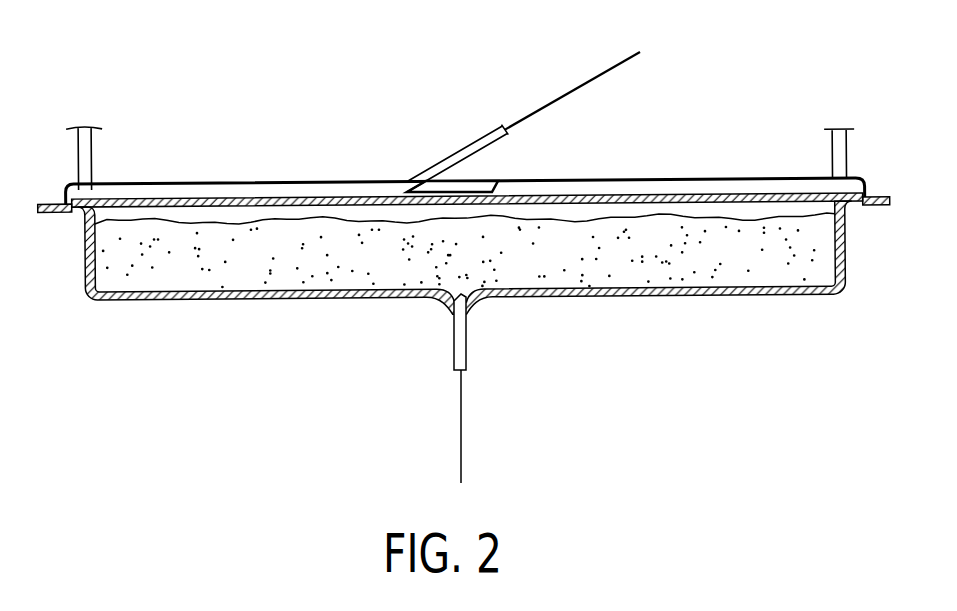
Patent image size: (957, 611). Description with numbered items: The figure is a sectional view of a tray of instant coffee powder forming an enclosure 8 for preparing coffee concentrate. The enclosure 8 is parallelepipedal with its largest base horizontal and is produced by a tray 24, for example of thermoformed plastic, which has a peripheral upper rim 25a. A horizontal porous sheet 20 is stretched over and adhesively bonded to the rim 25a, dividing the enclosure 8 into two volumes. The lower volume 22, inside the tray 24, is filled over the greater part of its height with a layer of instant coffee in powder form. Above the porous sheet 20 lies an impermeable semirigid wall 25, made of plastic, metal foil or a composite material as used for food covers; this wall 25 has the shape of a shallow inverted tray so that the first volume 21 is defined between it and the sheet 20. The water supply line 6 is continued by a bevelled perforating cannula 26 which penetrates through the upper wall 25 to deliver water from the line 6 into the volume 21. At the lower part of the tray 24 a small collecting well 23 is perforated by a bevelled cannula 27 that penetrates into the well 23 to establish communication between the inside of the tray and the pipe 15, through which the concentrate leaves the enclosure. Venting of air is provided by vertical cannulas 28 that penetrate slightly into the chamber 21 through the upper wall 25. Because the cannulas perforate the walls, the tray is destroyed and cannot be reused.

The water supply line 6 is at (596, 76).
The enclosure 8 is at (769, 297).
The pipe 15 is at (460, 445).
The porous sheet 20 is at (727, 198).
The first volume 21 is at (642, 187).
The lower volume 22 is at (268, 213).
The collecting well 23 is at (479, 303).
The tray 24 is at (183, 299).
The impermeable semirigid wall 25 is at (273, 183).
The peripheral upper rim 25a is at (48, 217).
The bevelled perforating cannula 26 is at (462, 156).
The bevelled cannula 27 is at (455, 347).
The vertical cannulas 28 is at (92, 160).